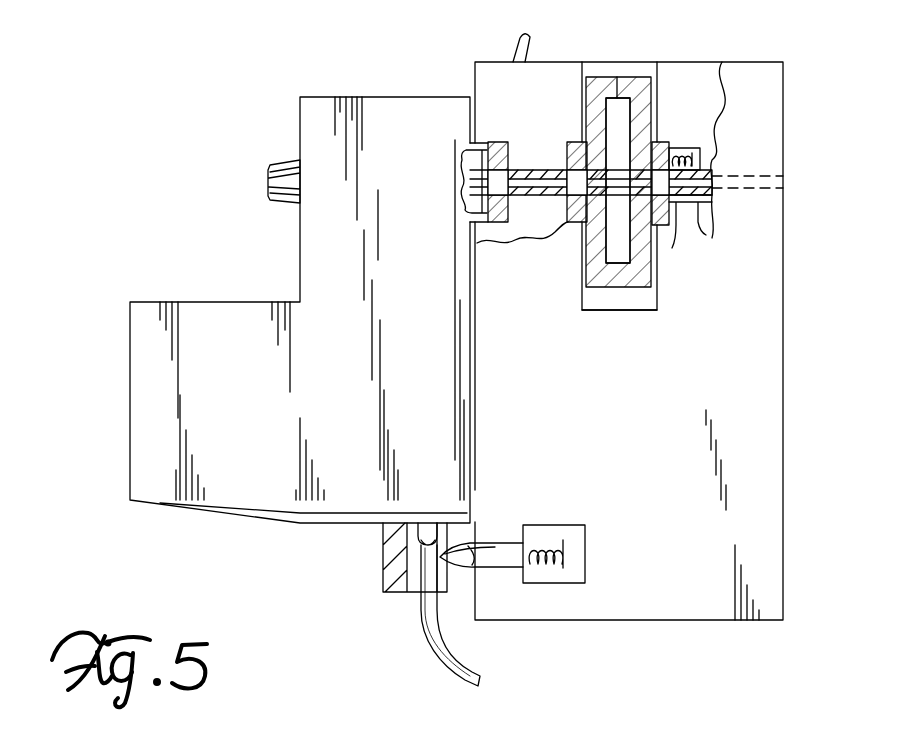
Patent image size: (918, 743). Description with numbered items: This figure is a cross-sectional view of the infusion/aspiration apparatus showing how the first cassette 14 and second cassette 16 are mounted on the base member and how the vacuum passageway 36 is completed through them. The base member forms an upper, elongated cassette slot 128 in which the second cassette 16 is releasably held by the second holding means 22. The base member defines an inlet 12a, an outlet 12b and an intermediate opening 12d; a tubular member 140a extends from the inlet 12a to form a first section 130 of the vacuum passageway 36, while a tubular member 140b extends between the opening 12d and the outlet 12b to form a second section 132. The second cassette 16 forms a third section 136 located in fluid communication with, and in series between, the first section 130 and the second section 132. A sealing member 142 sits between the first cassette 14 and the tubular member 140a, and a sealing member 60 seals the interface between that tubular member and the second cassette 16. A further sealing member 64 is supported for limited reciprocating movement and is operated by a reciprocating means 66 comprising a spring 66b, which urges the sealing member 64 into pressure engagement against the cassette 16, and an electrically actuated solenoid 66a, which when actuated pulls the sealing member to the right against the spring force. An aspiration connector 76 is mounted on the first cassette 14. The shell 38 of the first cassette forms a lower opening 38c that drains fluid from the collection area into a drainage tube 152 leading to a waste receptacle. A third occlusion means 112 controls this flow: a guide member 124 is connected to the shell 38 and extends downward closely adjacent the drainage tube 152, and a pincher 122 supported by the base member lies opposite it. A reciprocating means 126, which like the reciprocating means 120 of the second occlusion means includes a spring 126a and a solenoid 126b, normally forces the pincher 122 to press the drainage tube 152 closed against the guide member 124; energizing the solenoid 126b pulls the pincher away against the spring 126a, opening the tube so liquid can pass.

The inlet 12a is at (488, 240).
The outlet 12b is at (796, 186).
The intermediate opening 12d is at (662, 135).
The first cassette 14 is at (250, 252).
The second cassette 16 is at (596, 290).
The second holding means 22 is at (700, 128).
The vacuum passageway 36 is at (543, 200).
The shell 38 is at (130, 378).
The lower opening 38c is at (418, 523).
The sealing member 60 is at (568, 222).
The sealing member 64 is at (630, 265).
The reciprocating means 66 is at (745, 203).
The solenoid 66a is at (714, 172).
The spring 66b is at (690, 238).
The aspiration connector 76 is at (290, 158).
The third occlusion means 112 is at (512, 497).
The reciprocating means 120 is at (580, 150).
The pincher 122 is at (492, 560).
The guide member 124 is at (385, 540).
The reciprocating means 126 is at (556, 513).
The spring 126a is at (556, 575).
The solenoid 126b is at (586, 538).
The cassette slot 128 is at (608, 312).
The first section of vacuum passageway 130 is at (518, 165).
The second section of vacuum passageway 132 is at (662, 225).
The third section of vacuum passageway 136 is at (592, 150).
The tubular member 140a is at (500, 235).
The tubular member 140b is at (712, 160).
The sealing member 142 is at (482, 155).
The drainage tube 152 is at (422, 613).